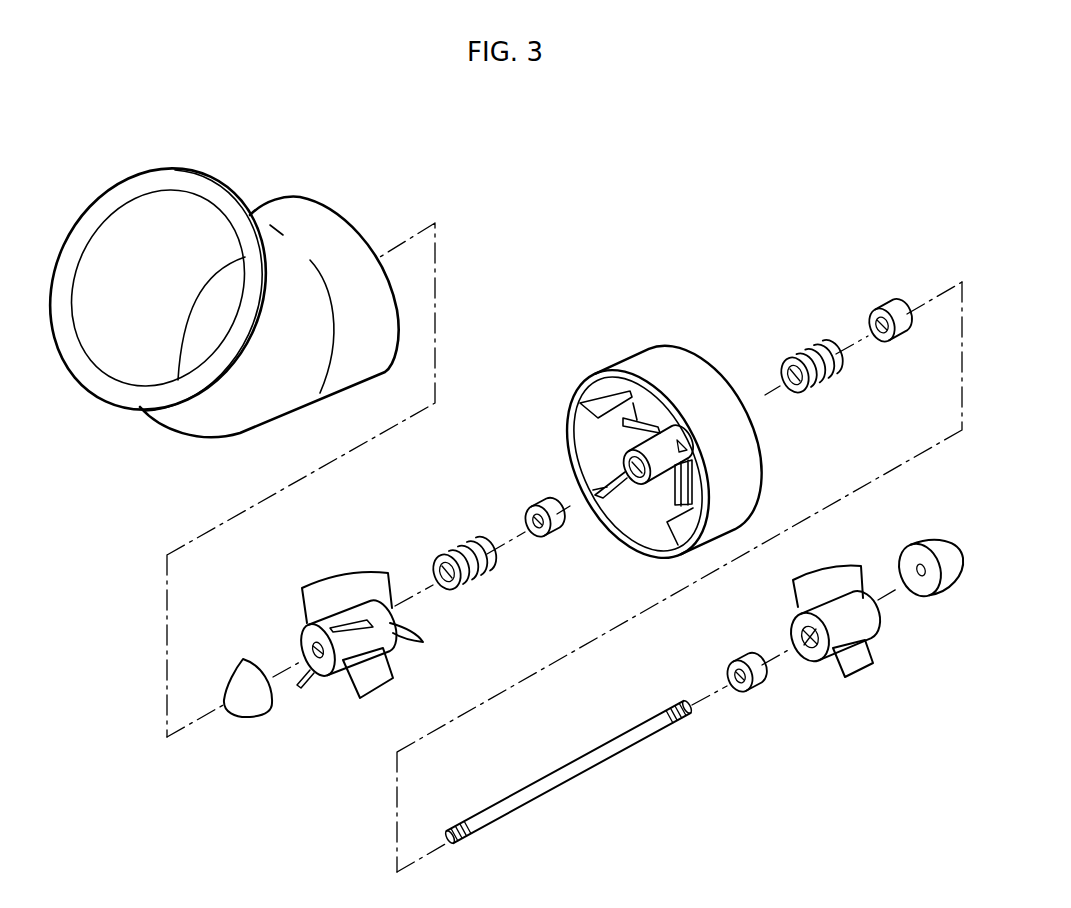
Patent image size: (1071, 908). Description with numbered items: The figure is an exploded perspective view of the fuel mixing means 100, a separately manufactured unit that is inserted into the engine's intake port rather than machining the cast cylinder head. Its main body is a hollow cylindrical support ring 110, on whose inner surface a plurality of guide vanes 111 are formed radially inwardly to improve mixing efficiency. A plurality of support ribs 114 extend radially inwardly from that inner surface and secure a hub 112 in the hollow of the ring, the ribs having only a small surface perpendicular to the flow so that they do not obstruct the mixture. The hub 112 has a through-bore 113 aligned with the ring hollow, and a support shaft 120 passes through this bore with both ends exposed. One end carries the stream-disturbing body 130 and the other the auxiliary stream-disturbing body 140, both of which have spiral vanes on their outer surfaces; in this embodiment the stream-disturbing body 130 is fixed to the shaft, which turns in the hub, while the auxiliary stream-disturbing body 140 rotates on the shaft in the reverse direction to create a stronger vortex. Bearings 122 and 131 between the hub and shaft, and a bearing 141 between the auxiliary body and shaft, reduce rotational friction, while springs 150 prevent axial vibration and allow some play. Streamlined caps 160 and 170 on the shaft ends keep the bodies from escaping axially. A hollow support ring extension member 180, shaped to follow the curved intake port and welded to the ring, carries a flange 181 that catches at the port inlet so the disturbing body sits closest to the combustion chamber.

The fuel mixing means 100 is at (632, 162).
The support ring 110 is at (709, 357).
The guide vanes 111 is at (577, 398).
The hub 112 is at (667, 476).
The through-bore 113 is at (623, 463).
The support ribs 114 is at (628, 405).
The support shaft 120 is at (598, 770).
The bearing 122 is at (883, 305).
The stream-disturbing body 130 is at (341, 676).
The bearing 131 is at (545, 542).
The auxiliary stream-disturbing body 140 is at (858, 676).
The bearing 141 is at (752, 692).
The springs 150 is at (462, 547).
The cap 160 is at (256, 722).
The cap 170 is at (948, 600).
The support ring extension member 180 is at (322, 200).
The flange 181 is at (122, 394).